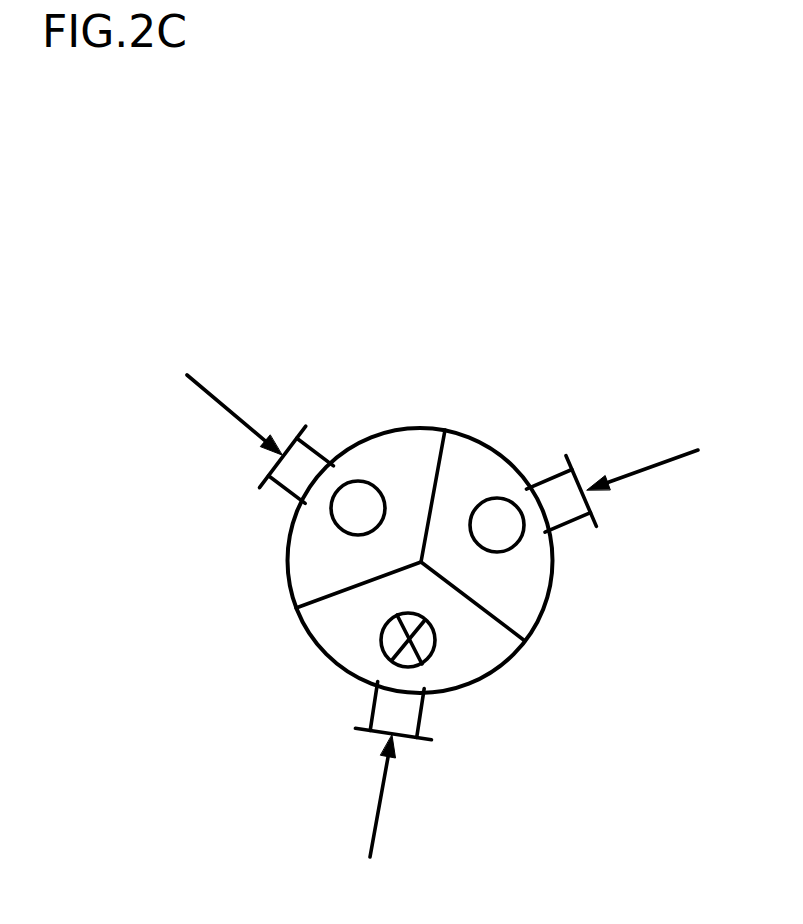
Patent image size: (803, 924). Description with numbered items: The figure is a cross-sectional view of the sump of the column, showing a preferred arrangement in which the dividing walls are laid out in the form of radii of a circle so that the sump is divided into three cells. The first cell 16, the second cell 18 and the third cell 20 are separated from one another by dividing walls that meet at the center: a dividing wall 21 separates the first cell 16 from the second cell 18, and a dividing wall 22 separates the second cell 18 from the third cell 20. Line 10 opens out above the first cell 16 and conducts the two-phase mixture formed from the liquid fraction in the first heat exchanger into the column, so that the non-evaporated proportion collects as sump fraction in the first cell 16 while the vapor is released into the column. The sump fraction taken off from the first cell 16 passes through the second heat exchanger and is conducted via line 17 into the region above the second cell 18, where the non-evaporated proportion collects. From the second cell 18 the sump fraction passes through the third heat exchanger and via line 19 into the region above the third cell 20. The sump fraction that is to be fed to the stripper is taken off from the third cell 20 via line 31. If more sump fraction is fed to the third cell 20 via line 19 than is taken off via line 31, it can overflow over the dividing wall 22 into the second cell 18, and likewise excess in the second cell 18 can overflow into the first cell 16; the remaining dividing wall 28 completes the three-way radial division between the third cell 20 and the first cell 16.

The line 10 is at (220, 407).
The first cell 16 is at (382, 455).
The line 17 is at (662, 467).
The second cell 18 is at (483, 463).
The line 19 is at (378, 815).
The third cell 20 is at (348, 653).
The dividing wall 21 is at (438, 455).
The dividing wall 22 is at (508, 632).
The third partition wall 28 is at (320, 597).
The line 31 is at (430, 652).